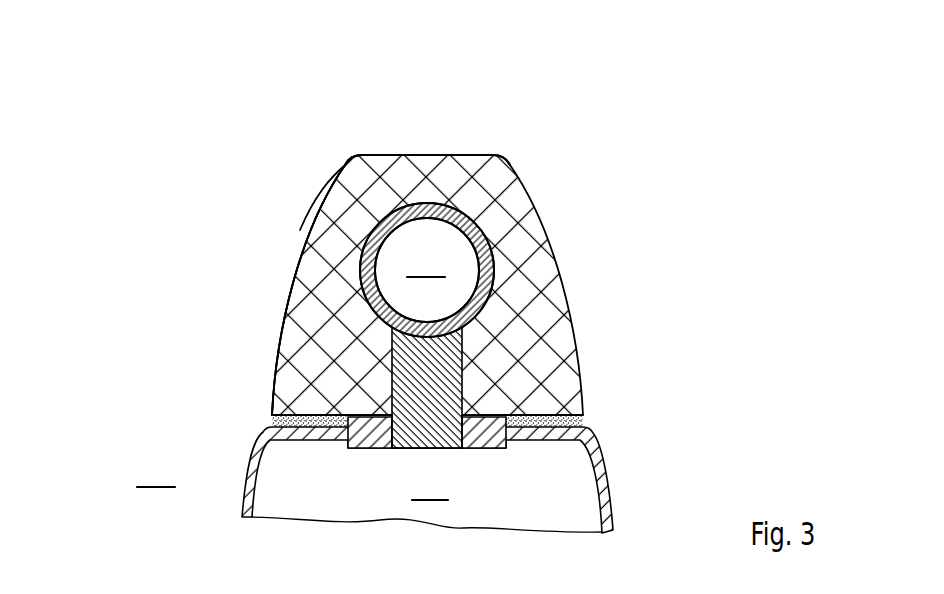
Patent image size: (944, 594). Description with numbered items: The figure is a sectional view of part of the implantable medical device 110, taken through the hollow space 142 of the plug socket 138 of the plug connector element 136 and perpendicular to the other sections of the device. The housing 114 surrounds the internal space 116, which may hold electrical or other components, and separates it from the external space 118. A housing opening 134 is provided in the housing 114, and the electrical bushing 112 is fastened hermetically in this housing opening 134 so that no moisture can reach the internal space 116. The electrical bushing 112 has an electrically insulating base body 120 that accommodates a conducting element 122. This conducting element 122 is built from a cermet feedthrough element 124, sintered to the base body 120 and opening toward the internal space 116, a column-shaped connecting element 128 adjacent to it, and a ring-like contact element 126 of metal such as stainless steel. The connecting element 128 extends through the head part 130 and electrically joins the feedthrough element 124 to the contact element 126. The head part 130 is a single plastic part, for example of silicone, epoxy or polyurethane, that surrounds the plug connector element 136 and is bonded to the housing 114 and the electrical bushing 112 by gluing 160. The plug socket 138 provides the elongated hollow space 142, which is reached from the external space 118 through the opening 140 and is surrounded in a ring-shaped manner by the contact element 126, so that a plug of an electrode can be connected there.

The implantable medical device 110 is at (620, 240).
The electrical bushing 112 is at (424, 128).
The housing 114 is at (605, 466).
The internal space 116 is at (427, 500).
The external space 118 is at (156, 473).
The base body 120 is at (488, 437).
The conducting element 122 is at (566, 325).
The feedthrough element 124 is at (430, 433).
The contact element 126 is at (478, 293).
The connecting element 128 is at (427, 360).
The head part 130 is at (357, 128).
The housing opening 134 is at (363, 432).
The plug connector element 136 is at (313, 152).
The plug socket 138 is at (262, 242).
The opening 140 is at (485, 232).
The hollow space 142 is at (427, 270).
The gluing 160 is at (270, 422).